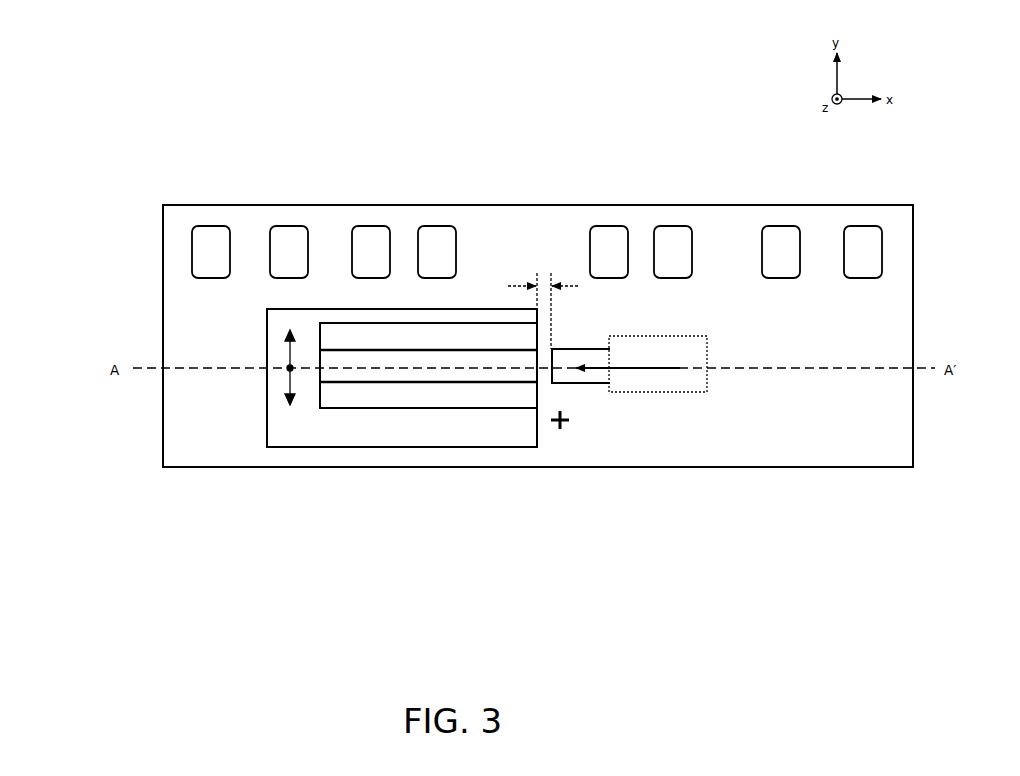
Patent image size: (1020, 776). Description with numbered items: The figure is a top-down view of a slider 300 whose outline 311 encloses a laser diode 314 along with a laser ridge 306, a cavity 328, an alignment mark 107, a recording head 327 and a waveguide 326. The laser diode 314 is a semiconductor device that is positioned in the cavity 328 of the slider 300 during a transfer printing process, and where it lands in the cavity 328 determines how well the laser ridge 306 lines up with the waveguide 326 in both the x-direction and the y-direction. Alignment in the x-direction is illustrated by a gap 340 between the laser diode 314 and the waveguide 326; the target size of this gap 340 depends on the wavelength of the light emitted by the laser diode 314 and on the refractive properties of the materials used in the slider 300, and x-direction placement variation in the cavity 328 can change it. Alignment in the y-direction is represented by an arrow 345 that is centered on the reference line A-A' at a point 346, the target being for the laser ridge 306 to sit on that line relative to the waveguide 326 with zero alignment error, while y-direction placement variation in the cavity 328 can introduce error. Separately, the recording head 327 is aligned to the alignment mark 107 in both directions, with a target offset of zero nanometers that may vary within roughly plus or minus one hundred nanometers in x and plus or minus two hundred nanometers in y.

The slider 300 is at (88, 74).
The substrate 311 is at (173, 362).
The cavity 328 is at (308, 411).
The laser ridge 306 is at (441, 358).
The laser diode 314 is at (386, 397).
The arrow 345 is at (288, 367).
The point 346 is at (288, 369).
The gap 340 is at (523, 311).
The waveguide 326 is at (620, 367).
The recording head 327 is at (663, 392).
The alignment mark 107 is at (557, 431).